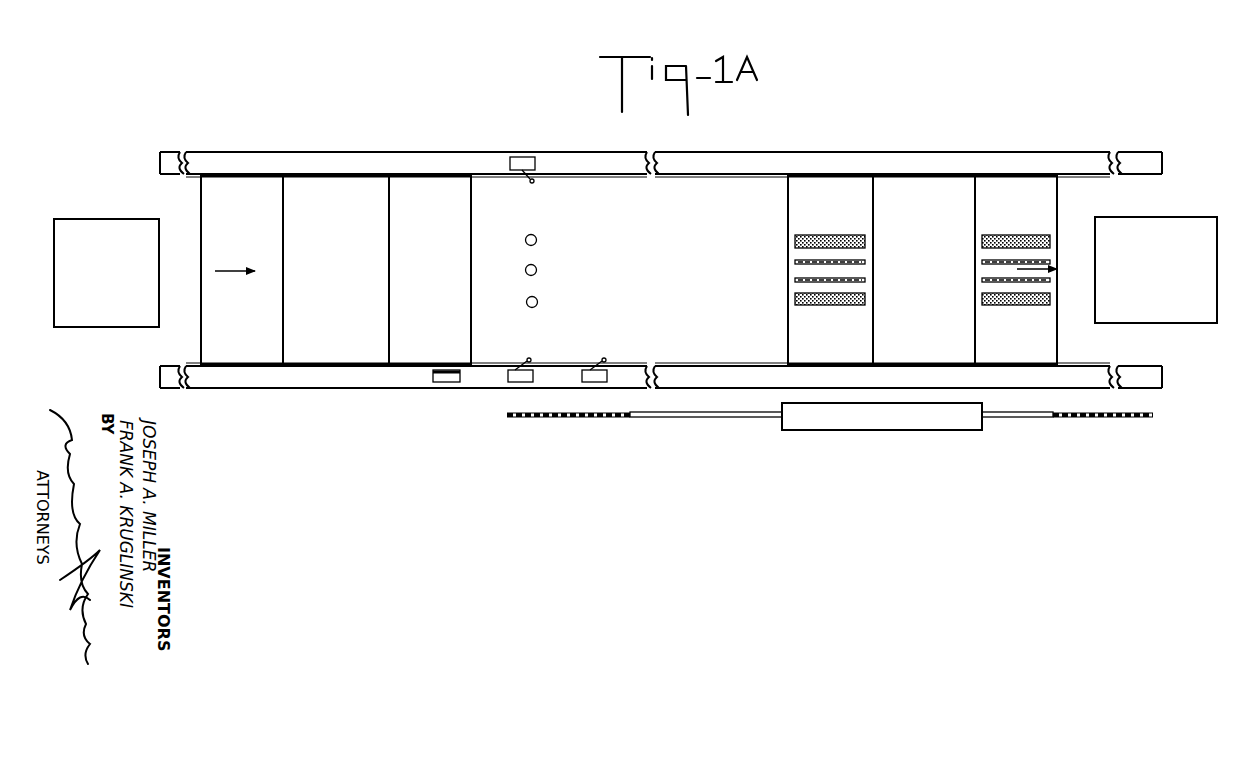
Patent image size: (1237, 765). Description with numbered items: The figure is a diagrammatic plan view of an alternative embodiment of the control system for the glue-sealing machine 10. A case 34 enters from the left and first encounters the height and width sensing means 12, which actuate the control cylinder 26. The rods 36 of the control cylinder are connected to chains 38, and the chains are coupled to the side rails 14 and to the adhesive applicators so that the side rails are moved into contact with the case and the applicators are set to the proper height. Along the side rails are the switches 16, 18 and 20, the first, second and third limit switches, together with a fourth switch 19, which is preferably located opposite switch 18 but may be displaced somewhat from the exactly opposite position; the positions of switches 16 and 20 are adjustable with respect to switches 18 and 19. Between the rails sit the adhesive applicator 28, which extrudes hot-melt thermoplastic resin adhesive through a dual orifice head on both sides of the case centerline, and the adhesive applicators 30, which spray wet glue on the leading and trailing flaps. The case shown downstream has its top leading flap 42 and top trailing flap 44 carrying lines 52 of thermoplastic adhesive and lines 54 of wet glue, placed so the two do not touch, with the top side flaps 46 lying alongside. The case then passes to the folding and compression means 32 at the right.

The glue-sealing machine 10 is at (543, 142).
The height and width sensing means 12 is at (78, 327).
The side rails 14 is at (488, 152).
The switch 16 is at (437, 376).
The switch 18 is at (508, 376).
The switch 19 is at (522, 157).
The switch 20 is at (600, 376).
The control cylinder 26 is at (916, 420).
The adhesive applicator 28 is at (537, 269).
The adhesive applicators 30 is at (536, 236).
The folding and compression means 32 is at (1197, 323).
The case 34 is at (253, 342).
The rods 36 is at (686, 418).
The chains 38 is at (592, 418).
The top leading flap 42 is at (453, 324).
The top trailing flap 44 is at (210, 205).
The top side flaps 46 is at (351, 176).
The lines of thermoplastic resin adhesive 52 is at (795, 281).
The lines of wet glue 54 is at (795, 240).